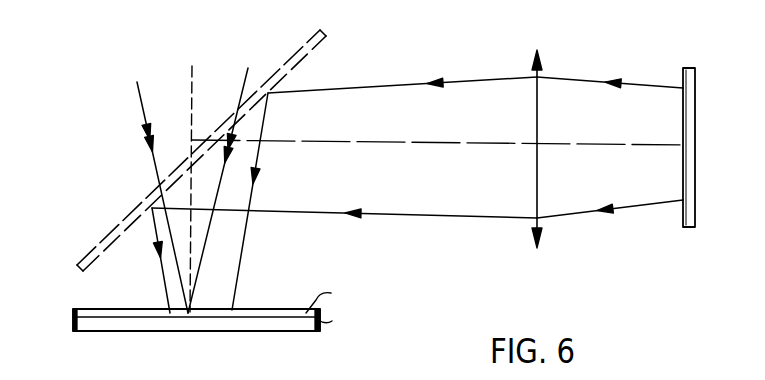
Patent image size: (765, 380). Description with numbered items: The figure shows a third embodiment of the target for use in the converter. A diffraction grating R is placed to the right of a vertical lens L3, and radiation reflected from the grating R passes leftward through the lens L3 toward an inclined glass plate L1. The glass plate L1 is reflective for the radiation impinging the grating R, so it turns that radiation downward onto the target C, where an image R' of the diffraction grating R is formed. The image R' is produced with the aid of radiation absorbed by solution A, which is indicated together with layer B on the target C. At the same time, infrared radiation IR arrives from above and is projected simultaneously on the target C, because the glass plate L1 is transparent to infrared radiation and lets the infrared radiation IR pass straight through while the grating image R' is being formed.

The infrared radiation IR is at (192, 175).
The glass plate L1 is at (84, 263).
The lens L3 is at (539, 131).
The diffraction grating R is at (686, 126).
The image of diffraction grating R' is at (214, 203).
The target C is at (73, 316).
The solution A is at (376, 297).
The layer B of plate B is at (382, 322).